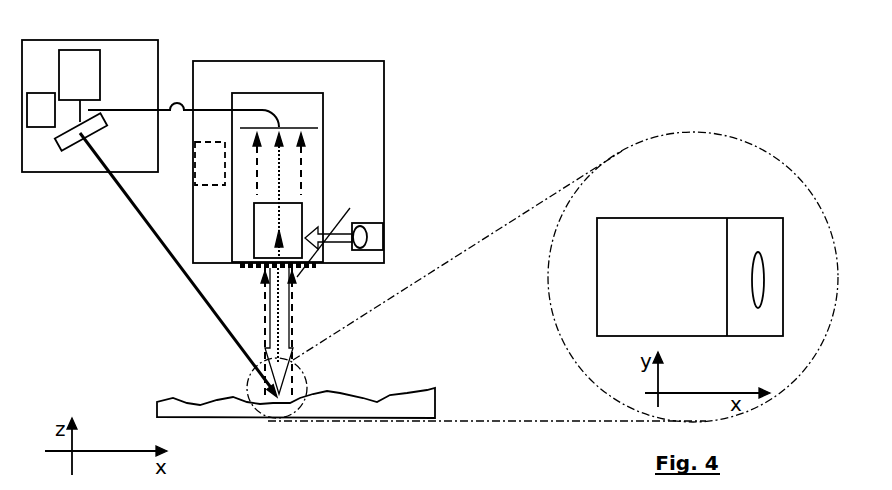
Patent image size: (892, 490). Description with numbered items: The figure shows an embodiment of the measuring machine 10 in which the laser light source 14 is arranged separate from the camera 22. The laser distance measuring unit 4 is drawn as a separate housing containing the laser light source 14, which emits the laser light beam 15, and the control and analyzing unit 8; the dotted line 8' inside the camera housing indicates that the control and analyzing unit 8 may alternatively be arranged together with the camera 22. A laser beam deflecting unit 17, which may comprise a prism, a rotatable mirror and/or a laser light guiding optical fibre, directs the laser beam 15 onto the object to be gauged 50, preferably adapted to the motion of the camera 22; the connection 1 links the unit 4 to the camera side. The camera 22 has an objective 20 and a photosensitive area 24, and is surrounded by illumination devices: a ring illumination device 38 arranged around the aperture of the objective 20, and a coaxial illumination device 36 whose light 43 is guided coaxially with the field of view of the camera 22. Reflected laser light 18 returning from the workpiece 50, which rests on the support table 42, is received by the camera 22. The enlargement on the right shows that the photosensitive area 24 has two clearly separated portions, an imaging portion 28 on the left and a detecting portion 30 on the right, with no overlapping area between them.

The optical fibre / beam guide 1 is at (177, 103).
The laser distance measuring unit 4 is at (128, 82).
The control and analyzing unit 8 is at (41, 110).
The dotted line 8' is at (210, 163).
The measuring machine 10 is at (264, 50).
The laser light source 14 is at (68, 85).
The laser light beam 15 is at (148, 226).
The laser beam deflecting unit 17 is at (92, 123).
The reflected laser light 18 is at (280, 180).
The objective 20 is at (288, 217).
The camera 22 is at (262, 107).
The photosensitive area 24 is at (279, 129).
The imaging portion 28 is at (651, 286).
The detecting portion 30 is at (745, 238).
The coaxial illumination device 36 is at (373, 237).
The ring illumination device 38 is at (240, 268).
The support table 42 is at (384, 200).
The light 43 is at (267, 335).
The object to be gauged 50 is at (175, 401).